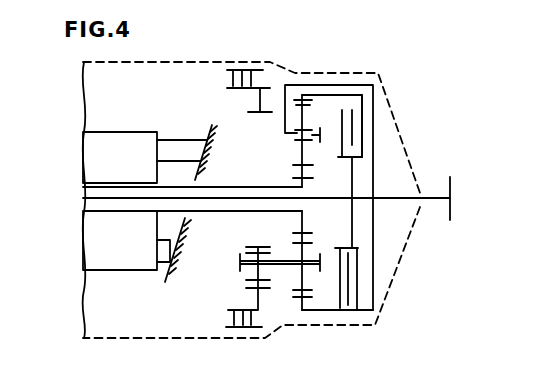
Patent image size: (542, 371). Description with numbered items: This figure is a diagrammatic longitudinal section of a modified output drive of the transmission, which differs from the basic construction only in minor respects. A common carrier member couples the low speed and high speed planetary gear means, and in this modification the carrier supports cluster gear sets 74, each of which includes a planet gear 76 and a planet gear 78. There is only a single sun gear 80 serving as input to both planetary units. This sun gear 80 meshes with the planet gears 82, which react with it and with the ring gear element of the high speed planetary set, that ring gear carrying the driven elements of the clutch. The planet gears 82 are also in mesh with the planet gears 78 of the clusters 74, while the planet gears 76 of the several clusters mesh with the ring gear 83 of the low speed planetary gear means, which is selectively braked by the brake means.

The cluster gear set 74 is at (278, 259).
The planet gear 76 is at (247, 251).
The planet gear 78 is at (306, 243).
The sun gear 80 is at (307, 176).
The planet gear 82 is at (300, 147).
The ring gear 83 is at (257, 100).